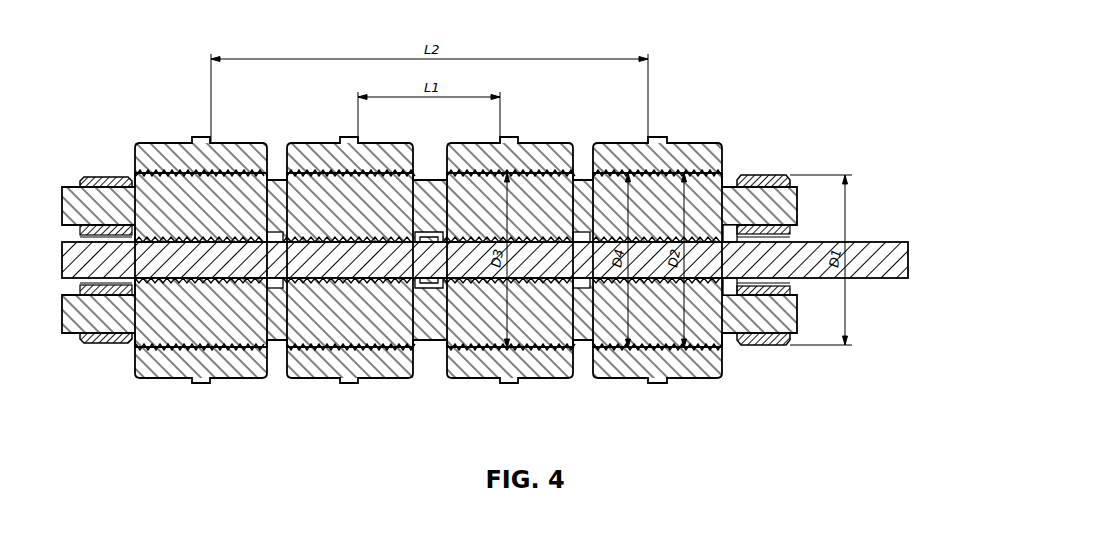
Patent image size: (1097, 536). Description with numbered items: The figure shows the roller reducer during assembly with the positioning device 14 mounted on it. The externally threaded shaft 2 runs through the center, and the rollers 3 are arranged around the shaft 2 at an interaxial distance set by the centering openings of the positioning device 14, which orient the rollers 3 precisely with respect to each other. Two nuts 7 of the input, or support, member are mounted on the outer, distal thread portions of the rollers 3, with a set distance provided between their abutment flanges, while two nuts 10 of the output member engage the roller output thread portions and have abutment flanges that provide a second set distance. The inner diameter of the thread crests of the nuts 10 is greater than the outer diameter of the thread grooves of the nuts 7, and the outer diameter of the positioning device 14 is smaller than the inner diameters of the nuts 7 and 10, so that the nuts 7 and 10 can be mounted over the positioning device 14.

The externally threaded shaft 2 is at (497, 220).
The roller 3 is at (429, 218).
The nut of the input or support member 7 is at (429, 293).
The nut of the output member 10 is at (434, 293).
The positioning device 14 is at (451, 294).